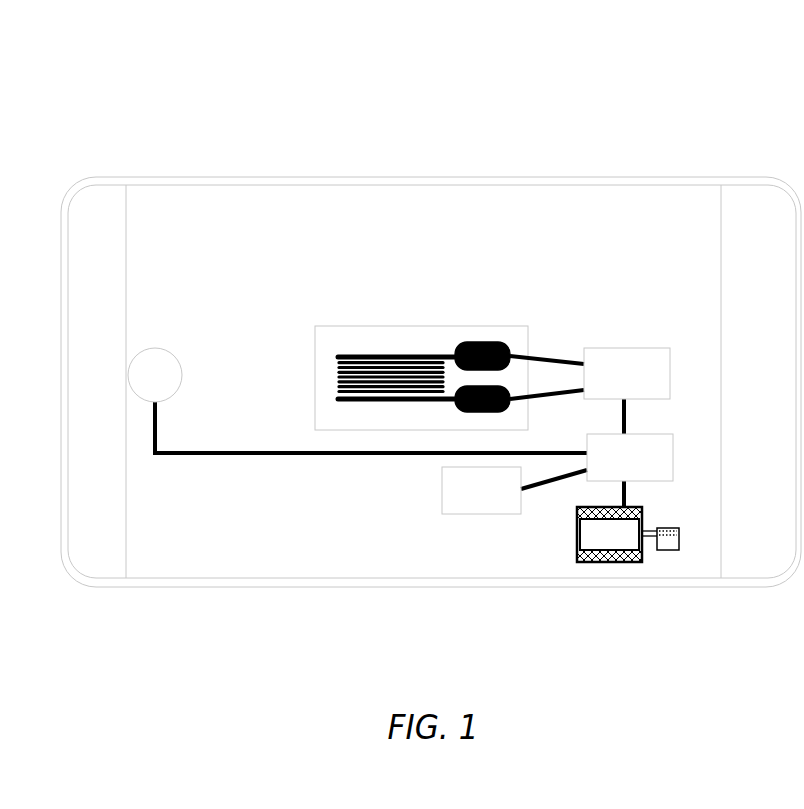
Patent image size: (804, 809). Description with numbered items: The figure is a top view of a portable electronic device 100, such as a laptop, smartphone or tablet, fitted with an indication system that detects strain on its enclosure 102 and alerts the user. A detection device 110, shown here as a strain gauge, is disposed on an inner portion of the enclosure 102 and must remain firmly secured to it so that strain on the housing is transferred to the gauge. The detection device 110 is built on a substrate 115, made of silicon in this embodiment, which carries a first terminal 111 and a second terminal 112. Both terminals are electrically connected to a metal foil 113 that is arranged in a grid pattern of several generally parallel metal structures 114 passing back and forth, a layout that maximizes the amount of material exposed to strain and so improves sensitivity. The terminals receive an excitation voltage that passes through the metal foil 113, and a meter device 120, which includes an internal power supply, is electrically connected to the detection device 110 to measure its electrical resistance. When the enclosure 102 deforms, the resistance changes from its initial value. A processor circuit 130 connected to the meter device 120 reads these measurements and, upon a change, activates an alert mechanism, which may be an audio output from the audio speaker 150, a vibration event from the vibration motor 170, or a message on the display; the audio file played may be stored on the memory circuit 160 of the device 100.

The portable electronic device 100 is at (91, 90).
The enclosure 102 is at (386, 166).
The detection device 110 is at (411, 275).
The first terminal 111 is at (492, 342).
The second terminal 112 is at (505, 409).
The metal foil 113 is at (389, 348).
The metal structures 114 is at (327, 382).
The substrate 115 is at (341, 325).
The meter device 120 is at (611, 385).
The processor circuit 130 is at (614, 469).
The audio speaker 150 is at (139, 386).
The memory circuit 160 is at (465, 501).
The vibration motor 170 is at (593, 546).